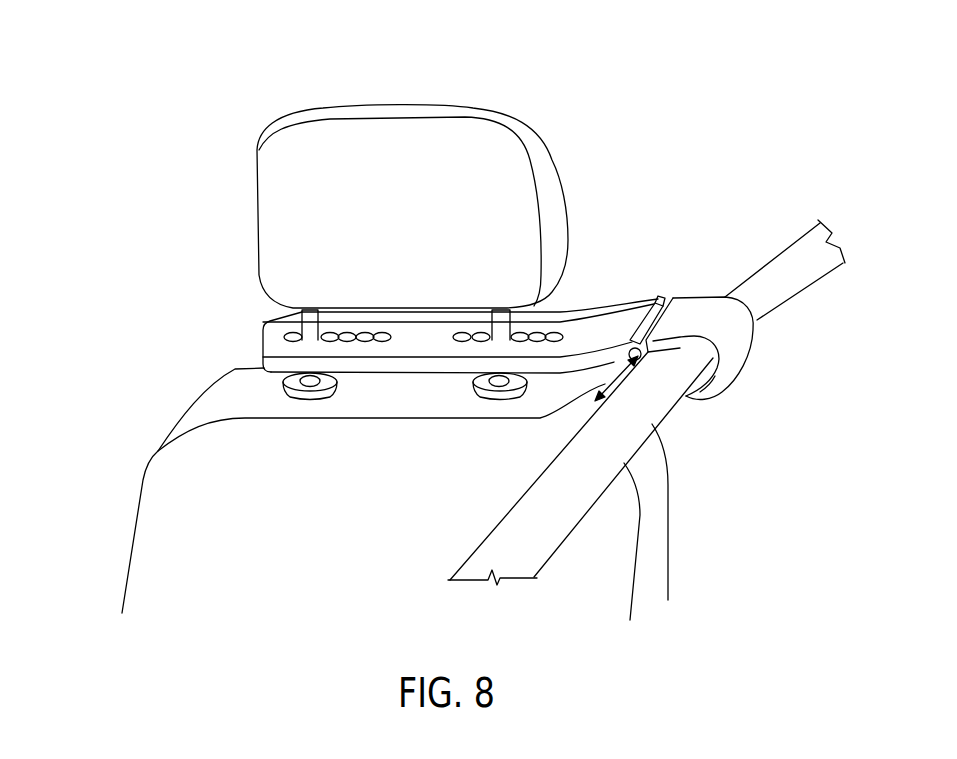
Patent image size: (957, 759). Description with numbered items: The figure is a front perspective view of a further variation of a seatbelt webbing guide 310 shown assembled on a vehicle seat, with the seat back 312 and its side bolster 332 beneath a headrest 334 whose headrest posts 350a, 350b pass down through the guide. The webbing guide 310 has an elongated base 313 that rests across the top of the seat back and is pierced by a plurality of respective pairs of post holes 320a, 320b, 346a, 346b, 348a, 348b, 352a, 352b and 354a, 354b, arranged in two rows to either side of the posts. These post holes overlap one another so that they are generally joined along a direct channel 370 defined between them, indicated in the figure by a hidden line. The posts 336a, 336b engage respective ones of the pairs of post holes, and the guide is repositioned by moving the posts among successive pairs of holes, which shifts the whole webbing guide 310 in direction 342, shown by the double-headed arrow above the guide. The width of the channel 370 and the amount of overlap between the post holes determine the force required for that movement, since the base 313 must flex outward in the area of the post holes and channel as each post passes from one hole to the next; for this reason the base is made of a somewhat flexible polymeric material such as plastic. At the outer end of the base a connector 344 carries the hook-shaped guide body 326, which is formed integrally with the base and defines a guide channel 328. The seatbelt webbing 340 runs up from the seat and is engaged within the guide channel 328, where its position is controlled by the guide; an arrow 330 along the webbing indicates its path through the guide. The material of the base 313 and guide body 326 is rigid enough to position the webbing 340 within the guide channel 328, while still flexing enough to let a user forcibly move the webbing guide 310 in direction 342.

The webbing guide 310 is at (793, 319).
The seat back 312 is at (155, 380).
The base 313 is at (359, 368).
The post hole 320a is at (542, 335).
The post hole 320b is at (387, 333).
The hook 326 is at (757, 363).
The guide channel 328 is at (707, 378).
The sliding direction 330 is at (600, 393).
The seat back side bolster 332 is at (620, 512).
The headrest 334 is at (477, 150).
The post 336a is at (479, 394).
The post 336b is at (297, 397).
The webbing 340 is at (547, 525).
The direction 342 is at (672, 237).
The connector 344 is at (658, 298).
The post hole 346a is at (557, 333).
The post hole 346b is at (365, 333).
The post hole 348a is at (522, 333).
The post hole 348b is at (345, 333).
The post hole 350a is at (497, 345).
The post hole 350b is at (308, 308).
The post hole 352a is at (484, 333).
The post hole 352b is at (293, 343).
The post hole 354a is at (460, 333).
The post hole 354b is at (257, 315).
The channel 370 is at (300, 343).